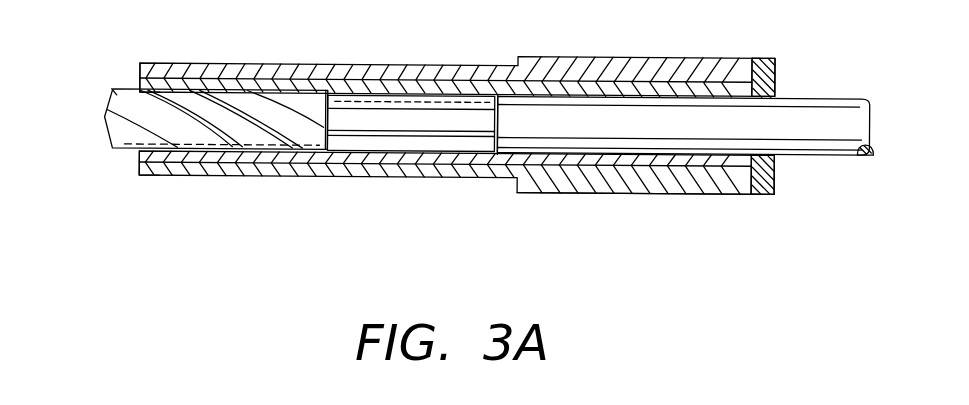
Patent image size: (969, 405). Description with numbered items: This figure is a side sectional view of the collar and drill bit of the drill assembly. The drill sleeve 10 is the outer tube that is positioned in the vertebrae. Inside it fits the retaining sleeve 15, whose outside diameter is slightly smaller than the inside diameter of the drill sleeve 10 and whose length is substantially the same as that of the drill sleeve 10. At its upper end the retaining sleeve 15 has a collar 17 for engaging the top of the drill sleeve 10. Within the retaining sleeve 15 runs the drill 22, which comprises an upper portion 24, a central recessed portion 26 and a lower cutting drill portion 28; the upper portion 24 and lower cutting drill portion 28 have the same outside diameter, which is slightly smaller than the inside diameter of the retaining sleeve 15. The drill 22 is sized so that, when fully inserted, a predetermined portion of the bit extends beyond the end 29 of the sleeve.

The drill sleeve 10 is at (301, 62).
The retaining sleeve 15 is at (138, 88).
The collar 17 is at (758, 194).
The drill 22 is at (777, 84).
The upper portion 24 is at (813, 155).
The central recessed portion 26 is at (358, 110).
The lower cutting drill portion 28 is at (105, 118).
The end of the sleeve 29 is at (140, 163).